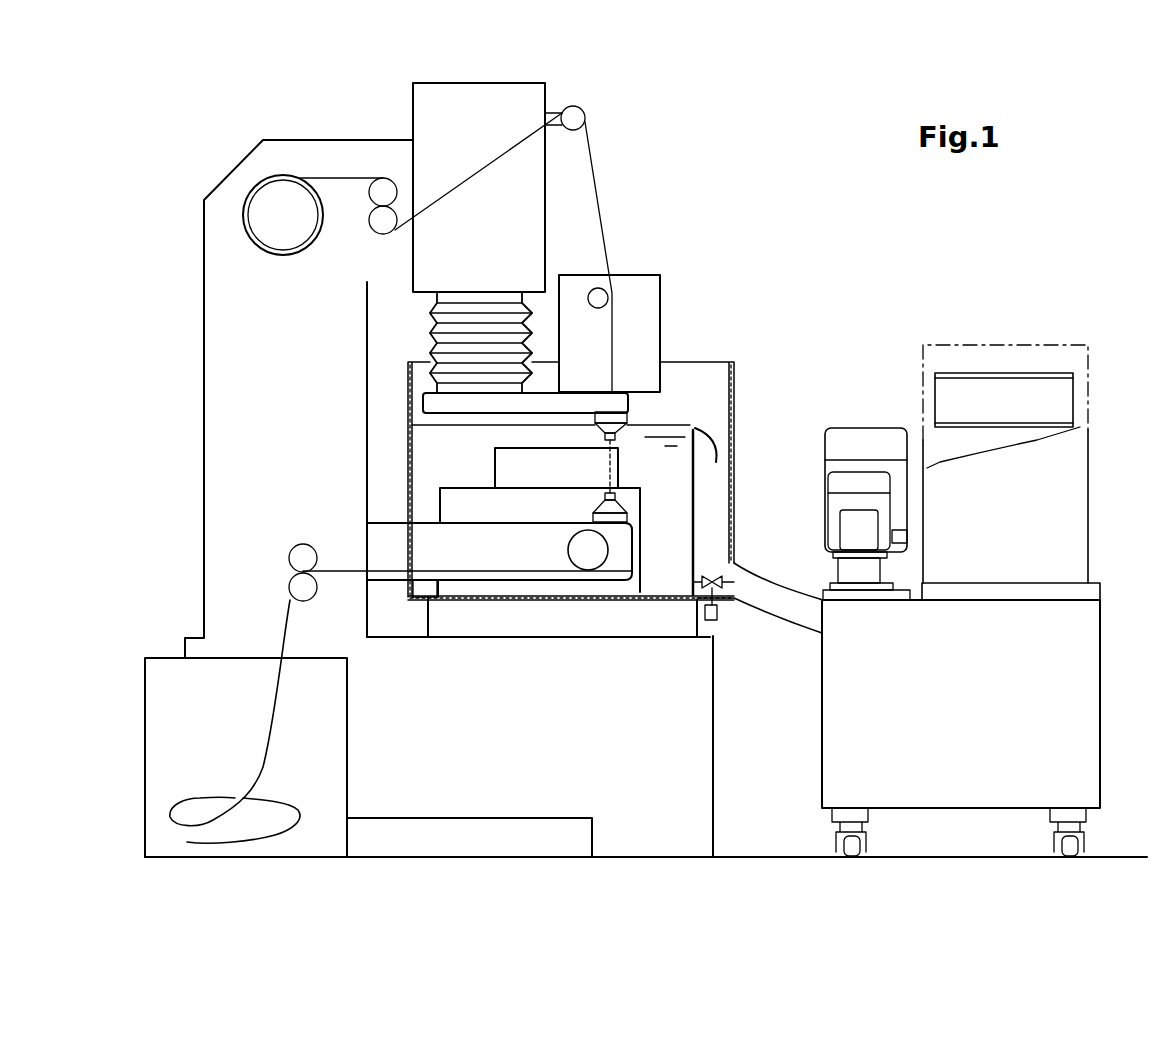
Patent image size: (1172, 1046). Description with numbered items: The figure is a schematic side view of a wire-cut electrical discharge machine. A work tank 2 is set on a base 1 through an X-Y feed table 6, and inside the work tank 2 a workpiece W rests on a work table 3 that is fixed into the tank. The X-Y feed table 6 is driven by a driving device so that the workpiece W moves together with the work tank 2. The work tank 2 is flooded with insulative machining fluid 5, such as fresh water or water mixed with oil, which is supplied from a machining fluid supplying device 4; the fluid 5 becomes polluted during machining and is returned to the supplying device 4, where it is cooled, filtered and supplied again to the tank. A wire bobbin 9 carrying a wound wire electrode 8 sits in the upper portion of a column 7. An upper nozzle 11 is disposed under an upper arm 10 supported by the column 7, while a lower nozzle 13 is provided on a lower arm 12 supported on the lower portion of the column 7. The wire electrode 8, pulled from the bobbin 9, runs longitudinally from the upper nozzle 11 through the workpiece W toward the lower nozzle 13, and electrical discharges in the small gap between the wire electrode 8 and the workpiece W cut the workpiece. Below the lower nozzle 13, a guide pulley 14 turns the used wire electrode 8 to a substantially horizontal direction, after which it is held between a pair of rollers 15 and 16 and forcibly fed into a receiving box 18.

The base 1 is at (553, 738).
The work tank 2 is at (410, 383).
The work table 3 is at (462, 505).
The machining fluid supplying device 4 is at (1102, 505).
The machining fluid 5 is at (670, 478).
The X-Y feed table 6 is at (665, 623).
The column 7 is at (236, 337).
The wire electrode 8 is at (485, 163).
The wire bobbin 9 is at (276, 204).
The upper arm 10 is at (572, 407).
The upper nozzle 11 is at (623, 422).
The lower arm 12 is at (492, 555).
The lower nozzle 13 is at (648, 503).
The guide pulley 14 is at (588, 560).
The roller 15 is at (303, 553).
The roller 16 is at (307, 589).
The receiving box 18 is at (347, 768).
The workpiece W is at (520, 468).